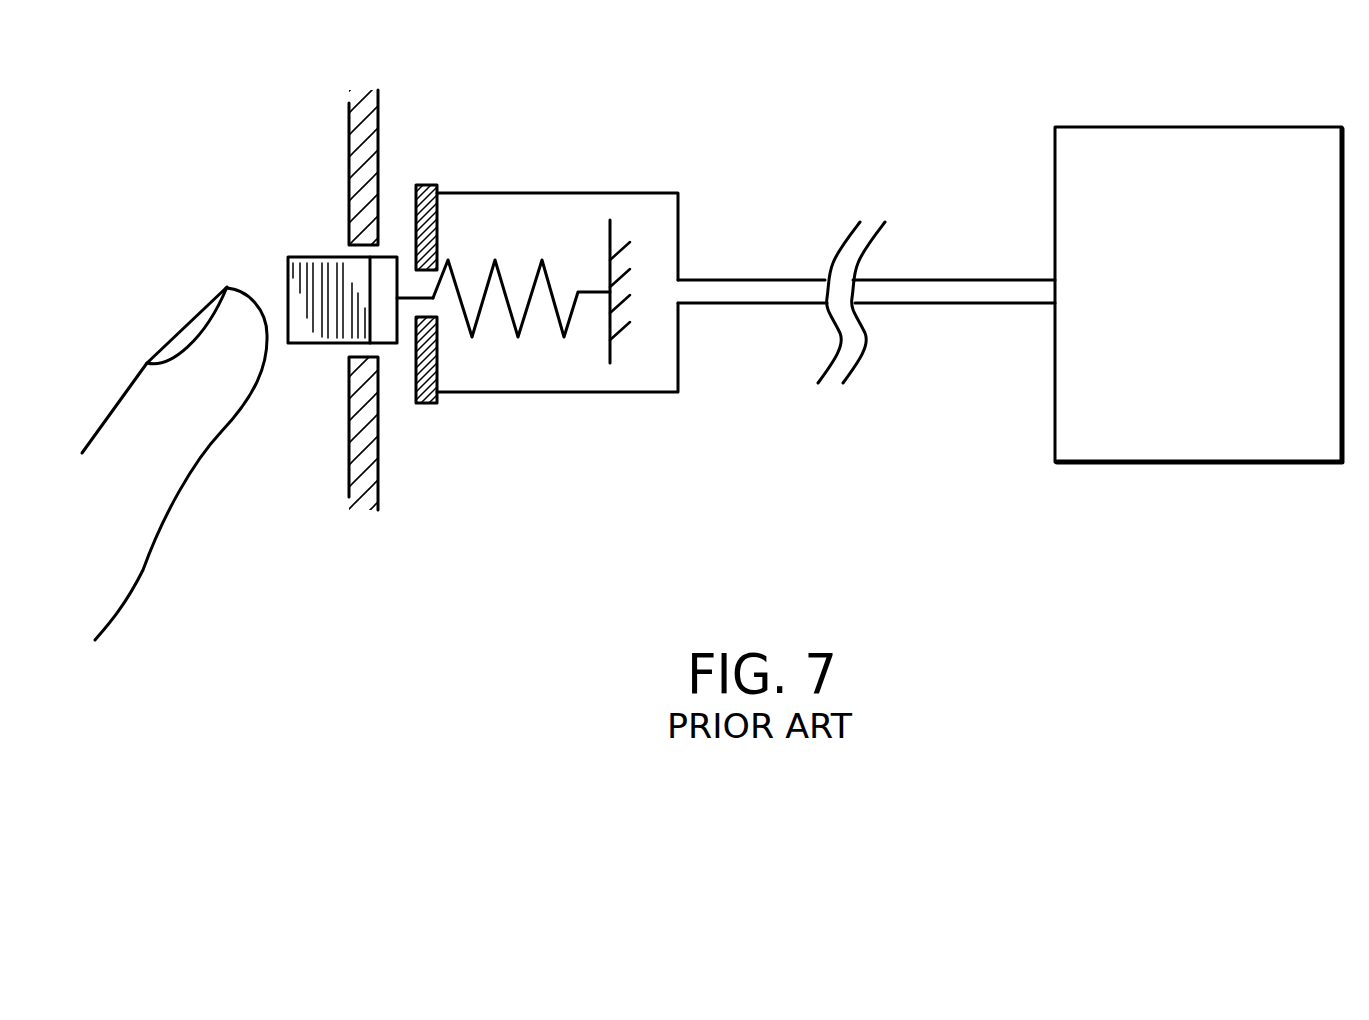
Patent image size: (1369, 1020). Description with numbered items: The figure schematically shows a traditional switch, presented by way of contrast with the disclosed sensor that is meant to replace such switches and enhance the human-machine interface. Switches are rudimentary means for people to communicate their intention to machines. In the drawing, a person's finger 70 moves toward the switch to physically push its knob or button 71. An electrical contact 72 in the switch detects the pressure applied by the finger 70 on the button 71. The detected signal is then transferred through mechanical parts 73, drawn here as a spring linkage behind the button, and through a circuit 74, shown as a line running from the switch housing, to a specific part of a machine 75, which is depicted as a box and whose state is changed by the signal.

The finger 70 is at (177, 318).
The button 71 is at (297, 255).
The electrical contact 72 is at (413, 207).
The mechanical parts 73 is at (515, 337).
The circuit 74 is at (765, 280).
The machine 75 is at (1155, 126).